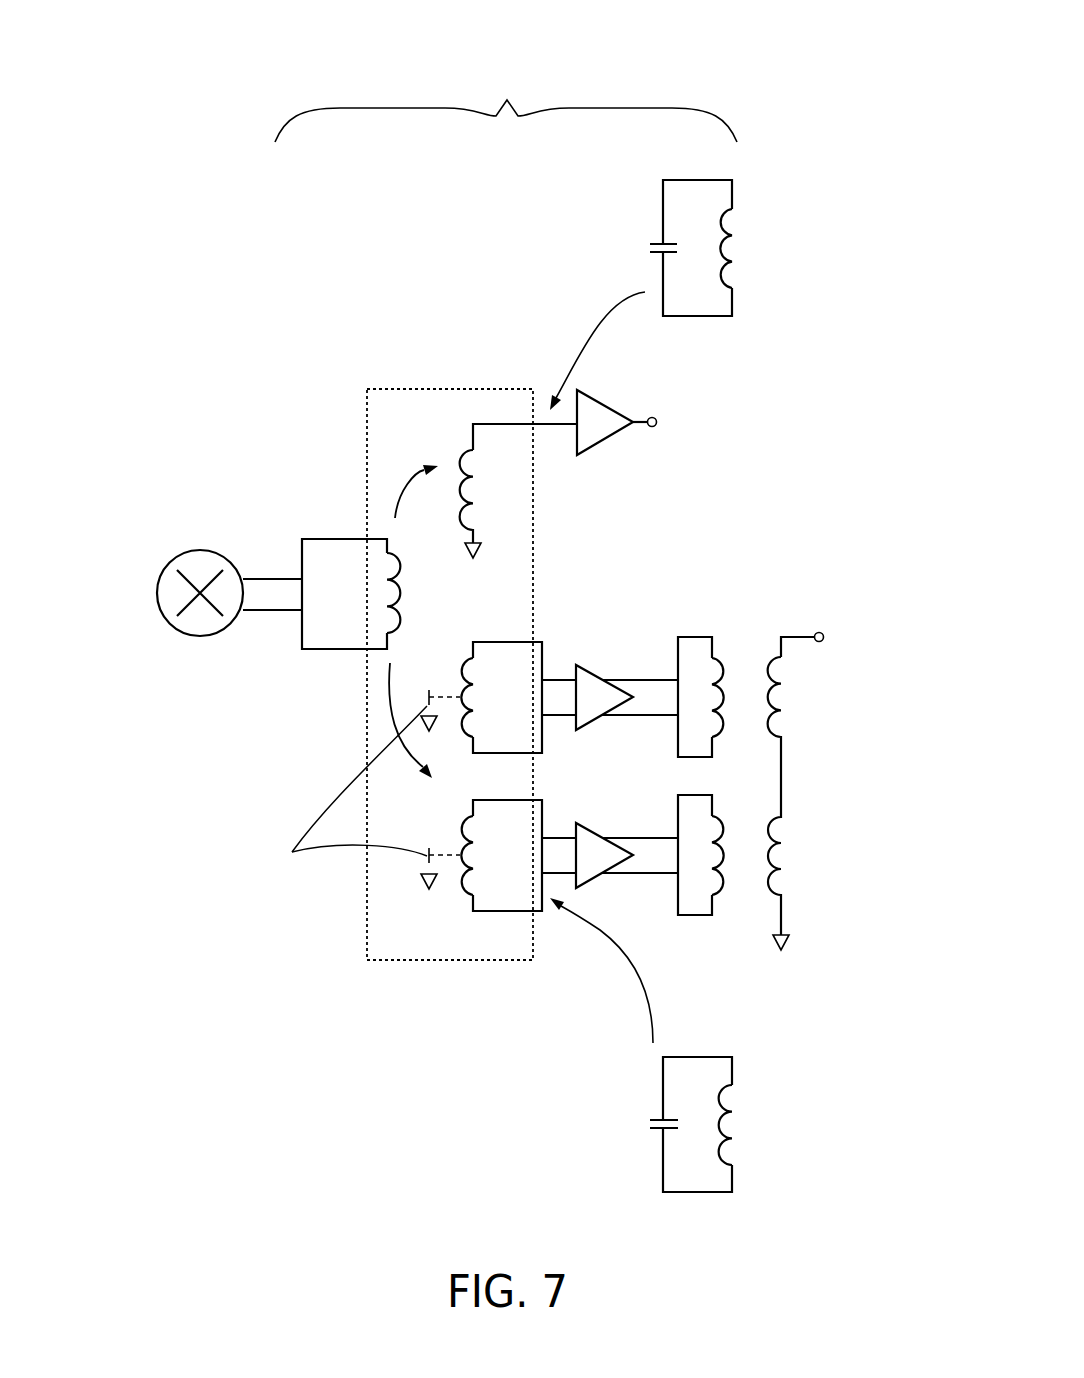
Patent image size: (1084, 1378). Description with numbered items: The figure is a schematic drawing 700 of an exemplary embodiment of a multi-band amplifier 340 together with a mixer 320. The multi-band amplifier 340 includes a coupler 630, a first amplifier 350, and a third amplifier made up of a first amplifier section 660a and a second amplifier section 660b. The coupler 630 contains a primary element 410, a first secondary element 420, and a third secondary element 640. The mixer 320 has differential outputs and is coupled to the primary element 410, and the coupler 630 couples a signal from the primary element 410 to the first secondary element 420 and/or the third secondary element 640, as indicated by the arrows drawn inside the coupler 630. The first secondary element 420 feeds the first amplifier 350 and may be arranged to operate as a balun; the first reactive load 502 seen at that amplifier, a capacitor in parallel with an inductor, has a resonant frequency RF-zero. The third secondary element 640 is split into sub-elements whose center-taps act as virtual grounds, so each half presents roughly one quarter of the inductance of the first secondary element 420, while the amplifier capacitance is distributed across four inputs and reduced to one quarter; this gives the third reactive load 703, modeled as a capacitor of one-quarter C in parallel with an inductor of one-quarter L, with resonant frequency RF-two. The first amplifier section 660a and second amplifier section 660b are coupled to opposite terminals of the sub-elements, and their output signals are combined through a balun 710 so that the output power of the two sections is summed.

The schematic drawing 700 is at (207, 37).
The multi-band amplifier 340 is at (632, 95).
The coupler 630 is at (403, 388).
The mixer 320 is at (160, 613).
The primary element 410 is at (387, 610).
The first secondary element 420 is at (477, 502).
The first amplifier 350 is at (603, 441).
The first reactive load 502 is at (732, 298).
The third secondary element 640 is at (460, 673).
The first amplifier section 660a is at (595, 665).
The second amplifier section 660b is at (595, 822).
The balun 710 is at (780, 843).
The third reactive load 703 is at (732, 1173).